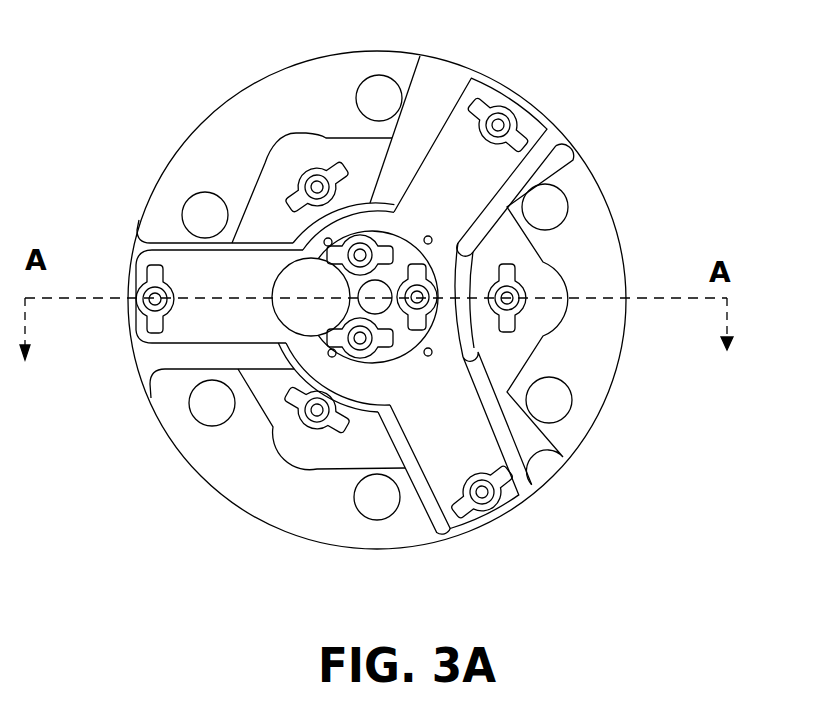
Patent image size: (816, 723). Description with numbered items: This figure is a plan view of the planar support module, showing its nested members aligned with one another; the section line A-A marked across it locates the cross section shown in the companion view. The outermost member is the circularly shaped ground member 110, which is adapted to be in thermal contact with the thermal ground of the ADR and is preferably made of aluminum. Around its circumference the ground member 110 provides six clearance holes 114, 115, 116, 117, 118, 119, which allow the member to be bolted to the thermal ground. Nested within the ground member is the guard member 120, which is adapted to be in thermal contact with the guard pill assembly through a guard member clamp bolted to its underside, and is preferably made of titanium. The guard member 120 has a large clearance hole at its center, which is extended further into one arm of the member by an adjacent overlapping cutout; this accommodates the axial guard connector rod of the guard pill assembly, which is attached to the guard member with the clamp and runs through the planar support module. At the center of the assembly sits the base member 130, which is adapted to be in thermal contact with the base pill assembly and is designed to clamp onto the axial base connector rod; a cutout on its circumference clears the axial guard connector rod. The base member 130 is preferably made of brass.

The ground member 110 is at (595, 247).
The clearance hole 114 is at (366, 99).
The clearance hole 115 is at (550, 203).
The clearance hole 116 is at (556, 396).
The clearance hole 117 is at (372, 495).
The clearance hole 118 is at (207, 410).
The clearance hole 119 is at (197, 213).
The guard member 120 is at (473, 190).
The base member 130 is at (400, 340).